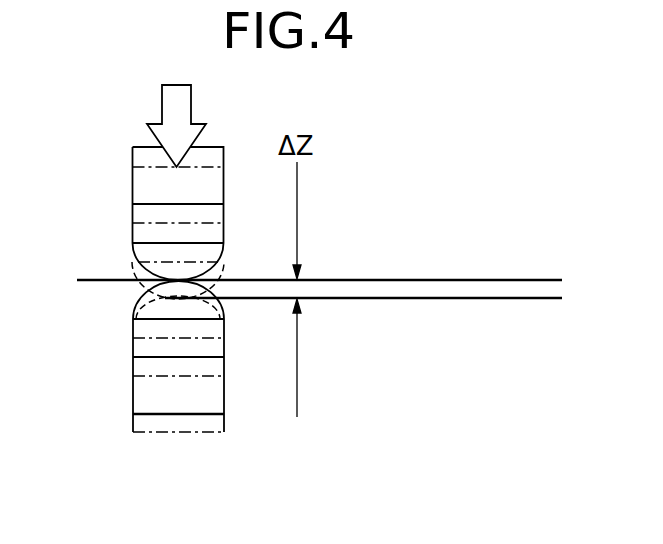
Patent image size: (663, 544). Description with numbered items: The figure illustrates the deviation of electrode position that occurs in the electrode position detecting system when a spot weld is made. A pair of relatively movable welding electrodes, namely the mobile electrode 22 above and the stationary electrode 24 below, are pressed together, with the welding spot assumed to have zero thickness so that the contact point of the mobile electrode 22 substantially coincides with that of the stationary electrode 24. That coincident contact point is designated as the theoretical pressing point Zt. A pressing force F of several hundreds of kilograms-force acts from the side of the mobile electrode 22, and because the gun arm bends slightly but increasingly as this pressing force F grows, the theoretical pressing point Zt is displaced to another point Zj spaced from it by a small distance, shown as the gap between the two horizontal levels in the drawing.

The mobile electrode 22 is at (132, 188).
The stationary electrode 24 is at (133, 350).
The pressing force F is at (192, 96).
The theoretical pressing point Zt is at (537, 276).
The deviated pressing point Zj is at (537, 300).